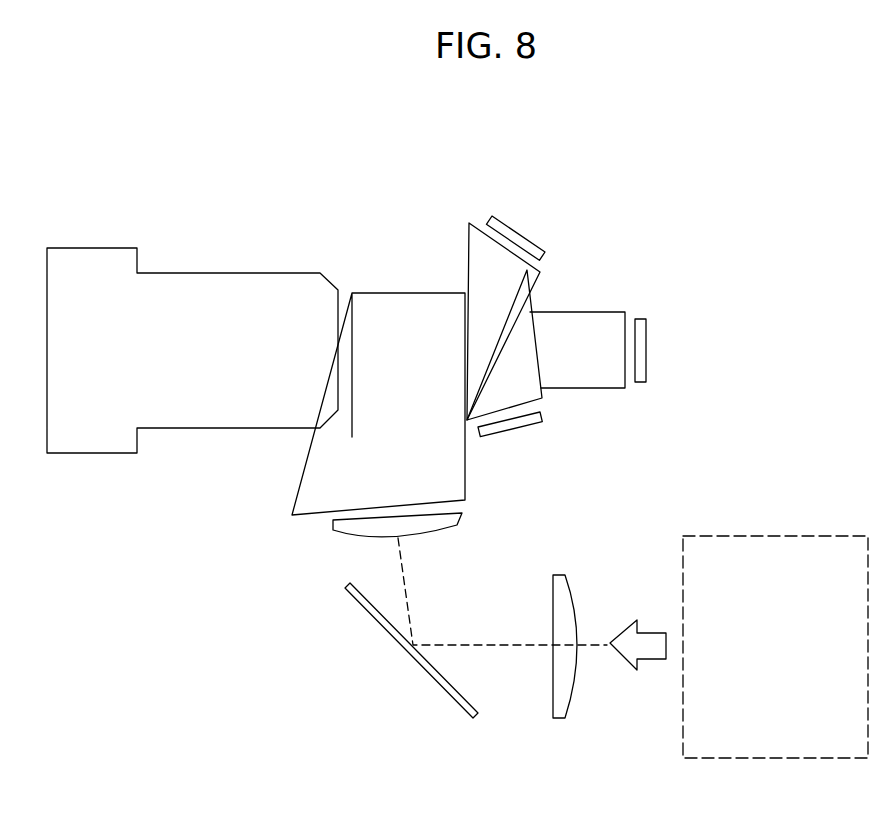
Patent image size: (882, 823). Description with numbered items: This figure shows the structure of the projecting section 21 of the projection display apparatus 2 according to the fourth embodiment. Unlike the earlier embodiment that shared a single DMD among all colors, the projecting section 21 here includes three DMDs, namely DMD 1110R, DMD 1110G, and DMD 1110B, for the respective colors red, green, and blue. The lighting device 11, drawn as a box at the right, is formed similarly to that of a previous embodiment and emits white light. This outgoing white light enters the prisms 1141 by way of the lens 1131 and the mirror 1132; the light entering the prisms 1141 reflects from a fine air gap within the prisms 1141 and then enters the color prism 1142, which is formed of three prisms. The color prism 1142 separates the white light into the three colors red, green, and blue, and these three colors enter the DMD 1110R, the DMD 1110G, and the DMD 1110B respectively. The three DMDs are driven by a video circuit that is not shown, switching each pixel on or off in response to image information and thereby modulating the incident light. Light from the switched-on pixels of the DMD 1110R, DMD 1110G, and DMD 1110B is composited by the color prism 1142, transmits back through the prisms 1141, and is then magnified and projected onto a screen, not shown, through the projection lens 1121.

The projector 2 is at (81, 147).
The lighting device 11 is at (783, 536).
The projecting section 21 is at (240, 587).
The projection lens 1121 is at (197, 273).
The lens 1131 is at (453, 526).
The mirror 1132 is at (372, 623).
The prisms 1141 is at (465, 284).
The color prism 1142 is at (517, 348).
The DMD 1110B is at (495, 220).
The DMD 1110G is at (647, 323).
The DMD 1110R is at (545, 420).